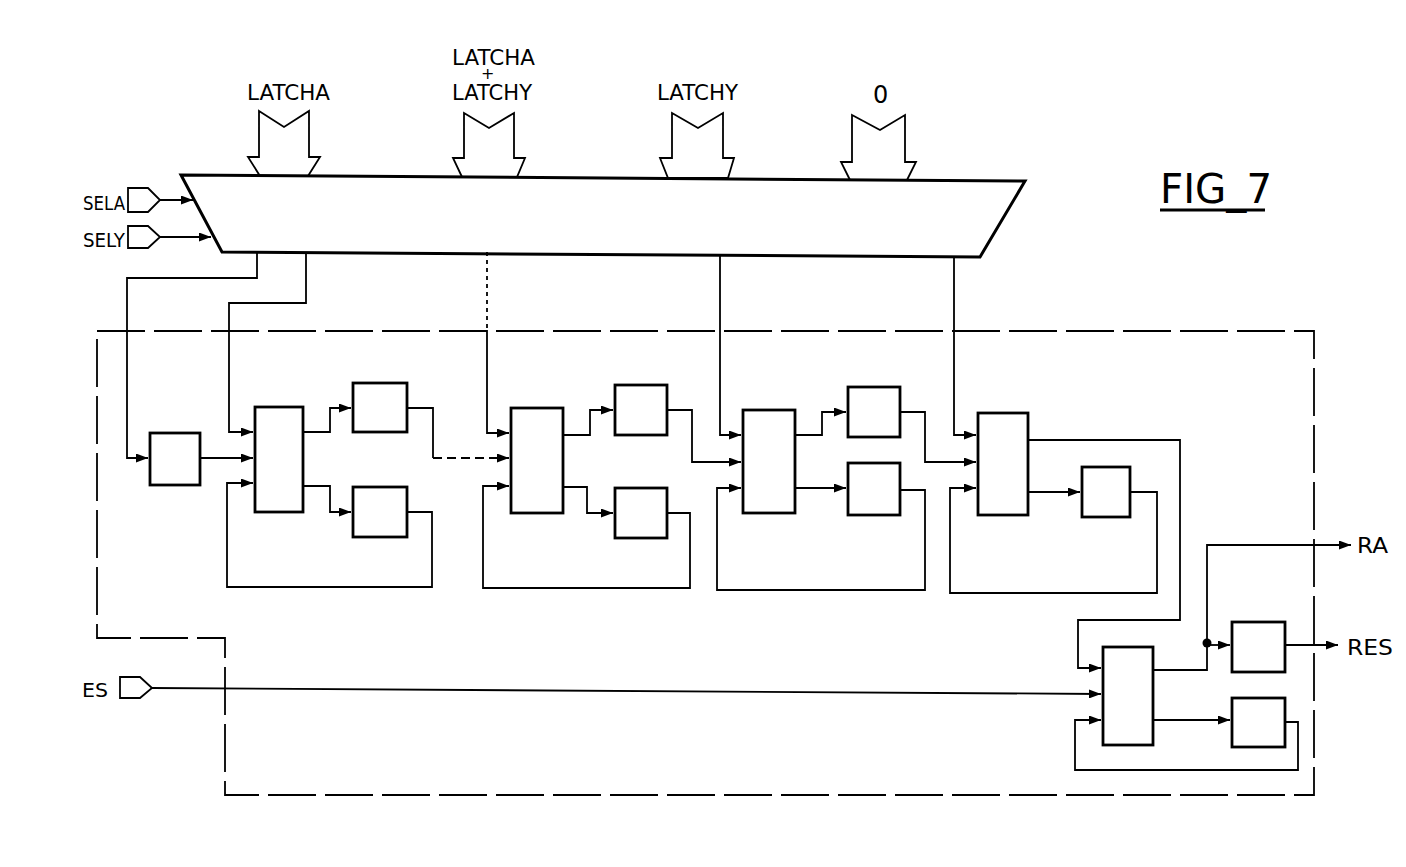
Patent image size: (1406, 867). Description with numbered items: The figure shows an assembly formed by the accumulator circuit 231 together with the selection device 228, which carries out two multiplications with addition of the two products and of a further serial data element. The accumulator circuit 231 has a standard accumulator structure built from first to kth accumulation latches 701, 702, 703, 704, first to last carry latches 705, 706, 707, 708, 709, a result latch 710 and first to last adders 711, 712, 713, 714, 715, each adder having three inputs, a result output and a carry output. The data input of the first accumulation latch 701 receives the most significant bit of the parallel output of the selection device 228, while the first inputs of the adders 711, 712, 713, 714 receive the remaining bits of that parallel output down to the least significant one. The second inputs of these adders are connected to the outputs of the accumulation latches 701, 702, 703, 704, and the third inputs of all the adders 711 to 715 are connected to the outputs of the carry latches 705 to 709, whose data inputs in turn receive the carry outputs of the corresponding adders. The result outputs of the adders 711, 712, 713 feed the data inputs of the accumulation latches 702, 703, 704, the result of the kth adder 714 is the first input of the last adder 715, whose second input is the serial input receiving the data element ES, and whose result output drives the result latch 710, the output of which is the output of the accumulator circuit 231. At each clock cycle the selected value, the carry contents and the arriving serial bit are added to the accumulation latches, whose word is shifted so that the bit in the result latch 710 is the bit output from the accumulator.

The selection device 228 is at (1012, 212).
The accumulator circuit 231 is at (572, 797).
The first accumulation latch 701 is at (170, 487).
The second accumulation latch 702 is at (380, 383).
The third accumulation latch 703 is at (640, 385).
The kth accumulation latch 704 is at (875, 387).
The first carry latch 705 is at (383, 537).
The second carry latch 706 is at (638, 538).
The third carry latch 707 is at (875, 515).
The fourth carry latch 708 is at (1103, 517).
The (k+1)th carry latch 709 is at (1283, 700).
The result latch 710 is at (1252, 620).
The first adder 711 is at (280, 405).
The second adder 712 is at (538, 406).
The third adder 713 is at (773, 408).
The kth adder 714 is at (1005, 411).
The (k+1)th adder 715 is at (1153, 688).